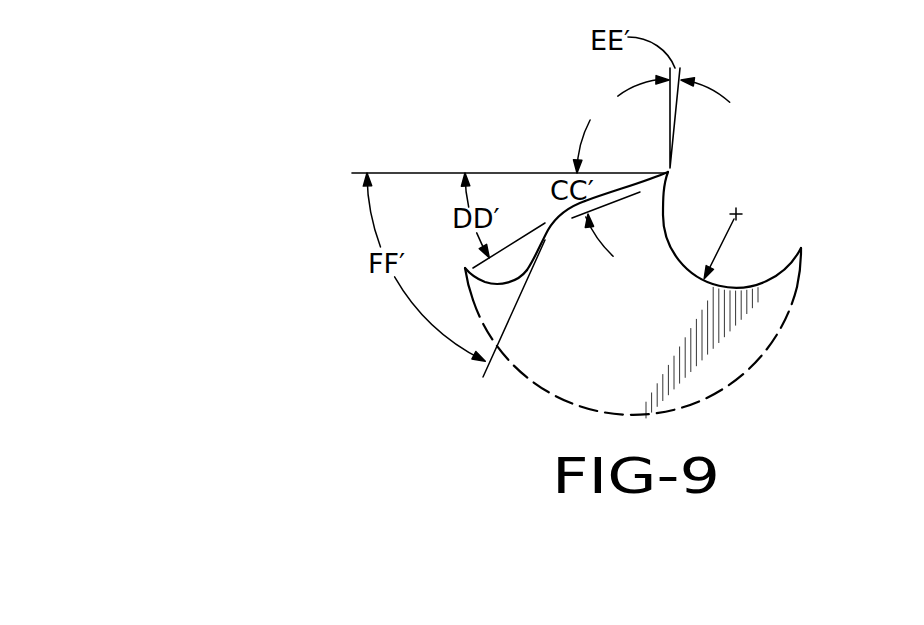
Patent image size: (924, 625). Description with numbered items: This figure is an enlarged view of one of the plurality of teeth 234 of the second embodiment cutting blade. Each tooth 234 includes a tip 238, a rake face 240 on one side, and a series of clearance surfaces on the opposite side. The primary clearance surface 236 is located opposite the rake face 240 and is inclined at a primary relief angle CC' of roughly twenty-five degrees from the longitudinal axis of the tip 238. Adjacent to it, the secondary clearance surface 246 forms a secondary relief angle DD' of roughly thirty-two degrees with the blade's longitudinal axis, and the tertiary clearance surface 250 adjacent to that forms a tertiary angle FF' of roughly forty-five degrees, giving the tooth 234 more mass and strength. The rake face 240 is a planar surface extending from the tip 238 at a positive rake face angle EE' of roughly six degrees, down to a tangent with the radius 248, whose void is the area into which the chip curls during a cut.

The teeth 234 is at (762, 290).
The primary clearance surface 236 is at (652, 179).
The tip 238 is at (672, 169).
The rake face 240 is at (665, 223).
The secondary clearance surface 246 is at (560, 212).
The radius 248 is at (722, 240).
The tertiary clearance surface 250 is at (545, 248).